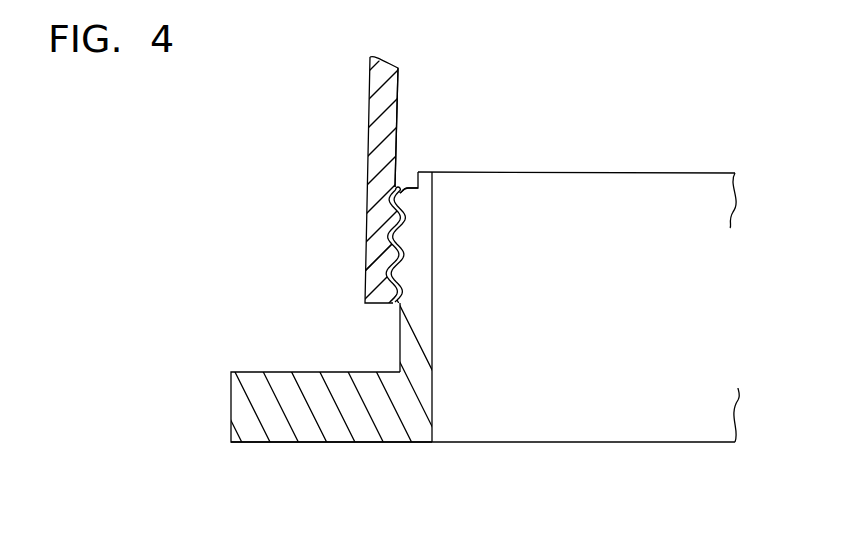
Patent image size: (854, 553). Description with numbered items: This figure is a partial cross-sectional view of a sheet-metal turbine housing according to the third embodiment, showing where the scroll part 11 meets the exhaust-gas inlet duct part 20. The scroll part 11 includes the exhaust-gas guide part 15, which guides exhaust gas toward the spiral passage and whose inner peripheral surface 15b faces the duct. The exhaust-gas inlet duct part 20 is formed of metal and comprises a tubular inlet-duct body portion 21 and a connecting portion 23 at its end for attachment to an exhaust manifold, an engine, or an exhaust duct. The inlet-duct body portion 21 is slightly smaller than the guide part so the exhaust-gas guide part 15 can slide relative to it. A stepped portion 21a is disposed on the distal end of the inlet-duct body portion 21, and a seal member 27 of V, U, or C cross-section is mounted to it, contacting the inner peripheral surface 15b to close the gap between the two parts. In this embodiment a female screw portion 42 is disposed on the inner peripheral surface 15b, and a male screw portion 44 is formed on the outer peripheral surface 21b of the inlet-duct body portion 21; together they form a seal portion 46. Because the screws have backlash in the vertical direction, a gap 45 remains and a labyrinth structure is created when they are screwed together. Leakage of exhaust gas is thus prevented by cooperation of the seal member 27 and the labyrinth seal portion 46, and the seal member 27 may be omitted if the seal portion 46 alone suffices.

The scroll part 11 is at (473, 199).
The exhaust-gas guide part 15 is at (475, 207).
The inner peripheral surface 15b is at (400, 108).
The exhaust-gas inlet duct part 20 is at (736, 160).
The inlet-duct body portion 21 is at (316, 322).
The stepped portion 21a is at (408, 186).
The outer peripheral surface 21b is at (400, 350).
The connecting portion 23 is at (337, 438).
The seal member 27 is at (393, 229).
The female screw portion 42 is at (393, 244).
The male screw portion 44 is at (405, 278).
The gap 45 is at (392, 242).
The seal portion 46 is at (368, 278).